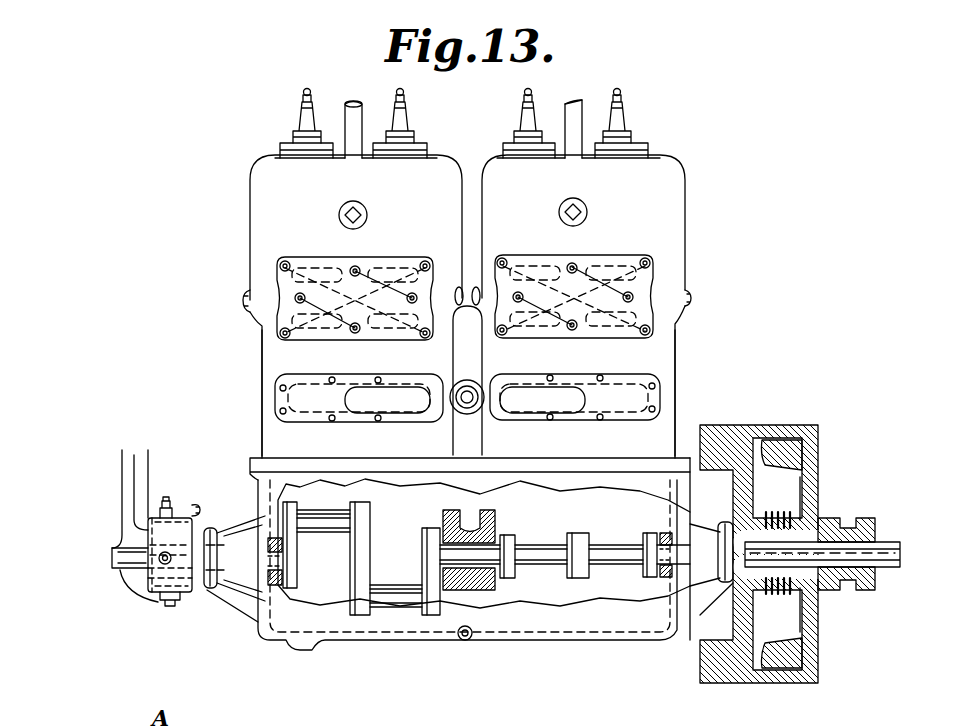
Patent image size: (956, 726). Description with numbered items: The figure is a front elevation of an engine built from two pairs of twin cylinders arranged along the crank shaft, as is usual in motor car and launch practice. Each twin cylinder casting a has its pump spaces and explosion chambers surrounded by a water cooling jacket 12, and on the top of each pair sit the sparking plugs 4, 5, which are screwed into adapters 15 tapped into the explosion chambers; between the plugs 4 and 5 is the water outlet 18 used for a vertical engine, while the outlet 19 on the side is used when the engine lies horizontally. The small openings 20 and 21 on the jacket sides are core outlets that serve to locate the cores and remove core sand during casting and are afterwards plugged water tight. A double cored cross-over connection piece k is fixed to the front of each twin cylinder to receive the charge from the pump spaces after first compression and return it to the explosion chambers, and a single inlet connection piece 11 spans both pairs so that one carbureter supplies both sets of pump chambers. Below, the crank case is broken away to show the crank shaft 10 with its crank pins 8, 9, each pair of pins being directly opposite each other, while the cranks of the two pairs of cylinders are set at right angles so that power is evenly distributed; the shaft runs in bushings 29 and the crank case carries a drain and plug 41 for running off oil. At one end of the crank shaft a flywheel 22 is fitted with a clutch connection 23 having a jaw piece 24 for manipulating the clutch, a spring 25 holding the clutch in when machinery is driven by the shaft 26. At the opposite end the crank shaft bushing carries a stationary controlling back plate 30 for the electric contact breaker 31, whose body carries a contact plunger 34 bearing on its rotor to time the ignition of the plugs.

The sparking plug 4 is at (296, 136).
The sparking plug 5 is at (403, 133).
The crank pin 8 is at (328, 526).
The crank pin 9 is at (411, 592).
The crank shaft 10 is at (486, 541).
The connection piece 11 is at (283, 400).
The water cooling jacket 12 is at (256, 186).
The adapter 15 is at (327, 641).
The water outlet 18 is at (350, 113).
The water outlet 19 is at (367, 215).
The outlet 20 is at (246, 300).
The outlet 21 is at (691, 298).
The flywheel 22 is at (734, 433).
The clutch connection 23 is at (806, 466).
The jaw piece 24 is at (842, 520).
The spring 25 is at (786, 592).
The shaft 26 is at (886, 547).
The crank shaft bushing 29 is at (300, 575).
The stationary controlling back plate 30 is at (212, 590).
The electric contact breaker 31 is at (166, 600).
The contact plunger 34 is at (167, 500).
The drain and plug 41 is at (466, 642).
The double cored cross-over connection piece k is at (280, 277).
The twin cylinder casting a is at (260, 433).